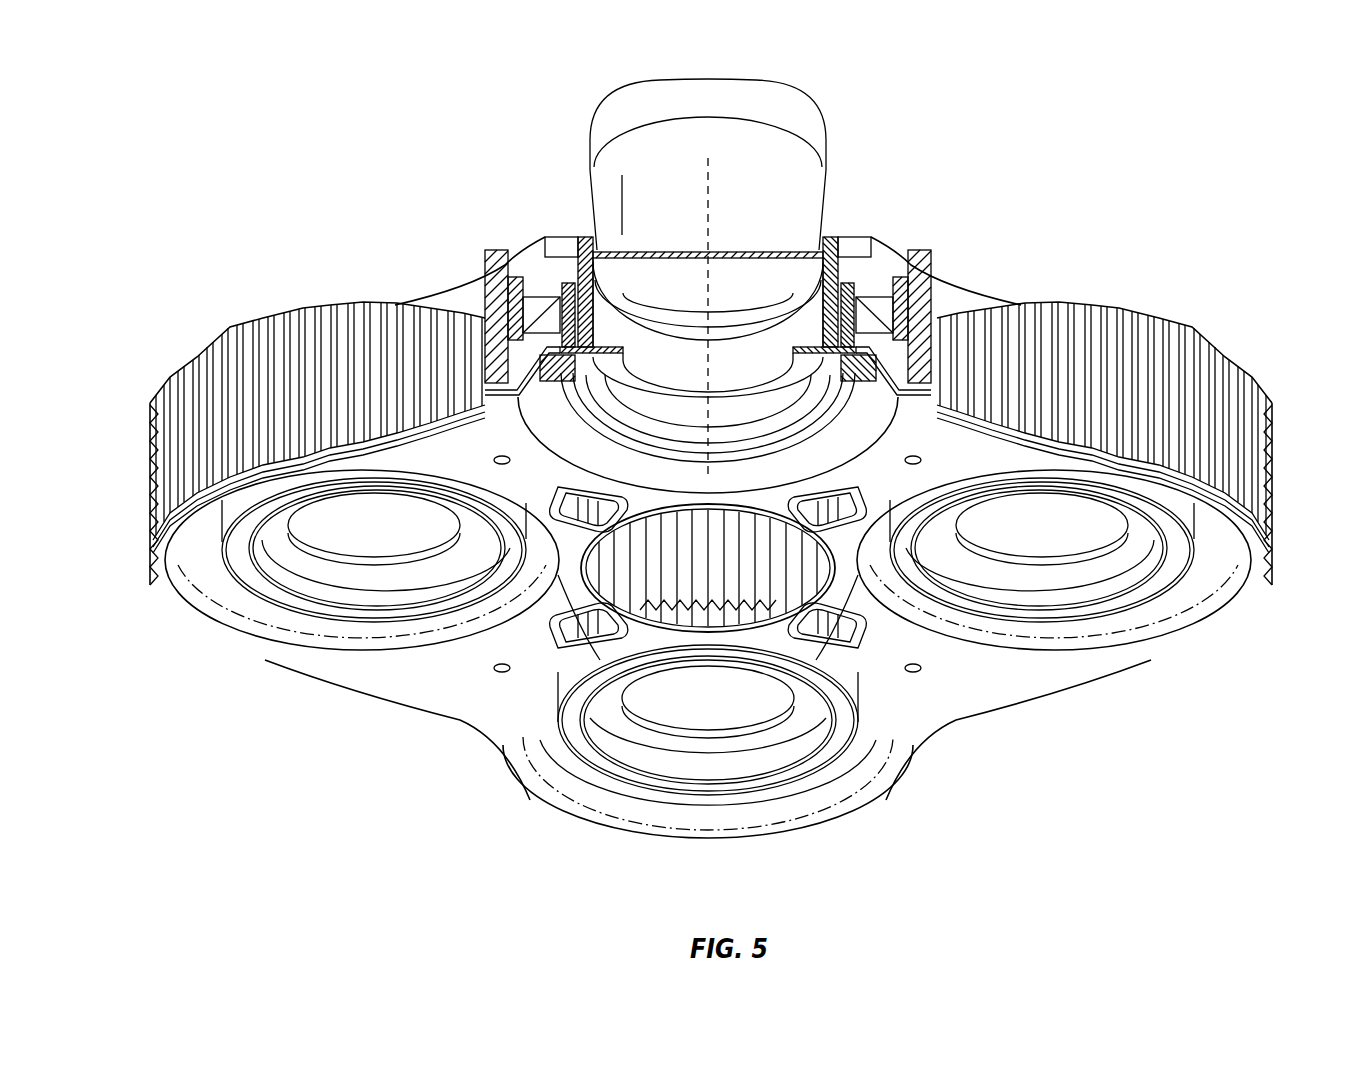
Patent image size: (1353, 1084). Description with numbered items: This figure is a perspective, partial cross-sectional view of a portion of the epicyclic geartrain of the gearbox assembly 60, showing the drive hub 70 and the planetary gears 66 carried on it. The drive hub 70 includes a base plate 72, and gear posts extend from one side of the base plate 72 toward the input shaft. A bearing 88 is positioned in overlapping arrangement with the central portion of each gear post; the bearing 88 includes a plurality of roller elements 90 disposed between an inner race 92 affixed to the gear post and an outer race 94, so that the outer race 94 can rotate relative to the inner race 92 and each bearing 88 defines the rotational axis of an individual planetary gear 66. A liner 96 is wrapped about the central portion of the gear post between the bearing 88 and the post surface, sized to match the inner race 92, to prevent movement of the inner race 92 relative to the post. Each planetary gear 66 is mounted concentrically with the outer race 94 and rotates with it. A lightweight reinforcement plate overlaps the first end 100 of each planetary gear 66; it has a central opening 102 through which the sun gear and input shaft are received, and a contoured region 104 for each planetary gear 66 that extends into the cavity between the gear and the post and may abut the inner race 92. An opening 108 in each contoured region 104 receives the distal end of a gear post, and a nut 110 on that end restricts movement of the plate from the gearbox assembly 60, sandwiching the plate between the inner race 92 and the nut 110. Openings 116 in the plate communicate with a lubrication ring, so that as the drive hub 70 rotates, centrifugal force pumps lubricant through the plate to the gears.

The gearbox assembly 60 is at (290, 95).
The planetary gear 66 is at (193, 365).
The drive hub 70 is at (570, 163).
The base plate 72 is at (450, 297).
The bearing 88 is at (566, 284).
The roller elements 90 is at (903, 272).
The inner race 92 is at (873, 310).
The outer race 94 is at (901, 290).
The liner 96 is at (541, 290).
The first end 100 is at (925, 690).
The central opening 102 is at (845, 590).
The contoured region 104 is at (212, 578).
The opening 108 is at (283, 615).
The nut 110 is at (318, 607).
The openings 116 is at (498, 458).